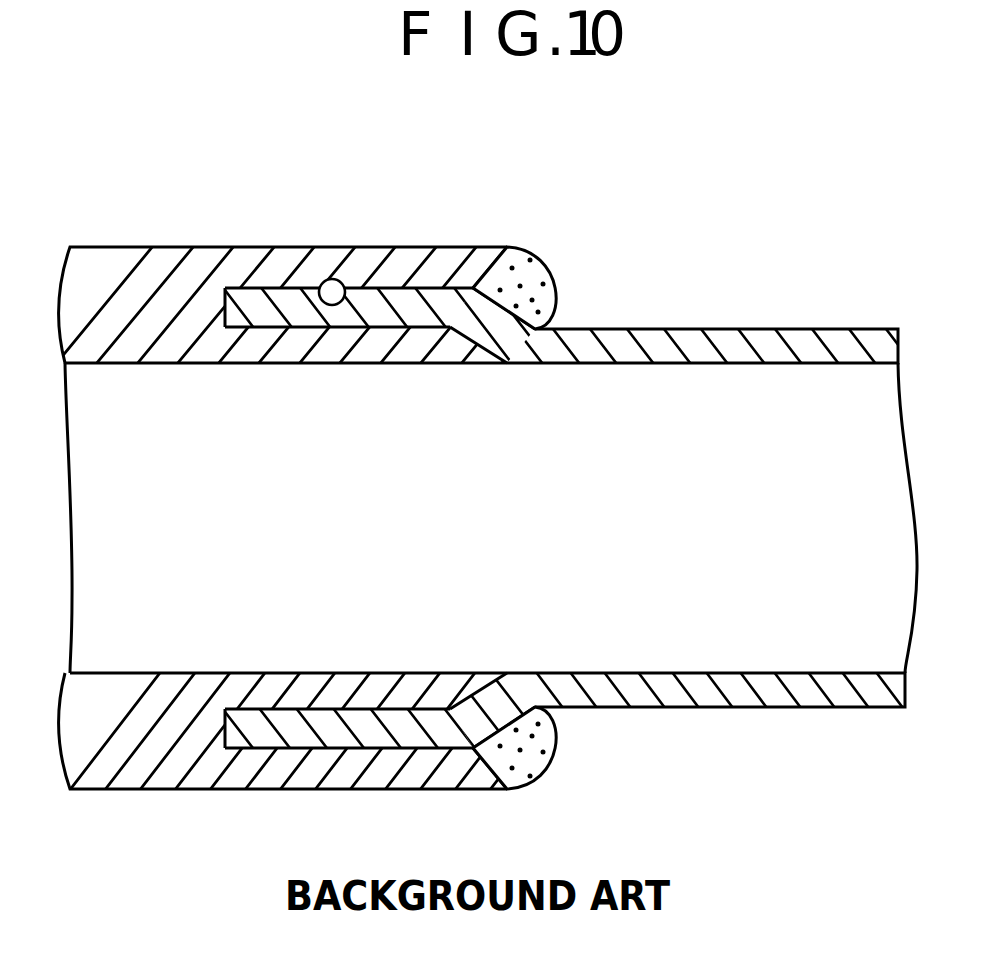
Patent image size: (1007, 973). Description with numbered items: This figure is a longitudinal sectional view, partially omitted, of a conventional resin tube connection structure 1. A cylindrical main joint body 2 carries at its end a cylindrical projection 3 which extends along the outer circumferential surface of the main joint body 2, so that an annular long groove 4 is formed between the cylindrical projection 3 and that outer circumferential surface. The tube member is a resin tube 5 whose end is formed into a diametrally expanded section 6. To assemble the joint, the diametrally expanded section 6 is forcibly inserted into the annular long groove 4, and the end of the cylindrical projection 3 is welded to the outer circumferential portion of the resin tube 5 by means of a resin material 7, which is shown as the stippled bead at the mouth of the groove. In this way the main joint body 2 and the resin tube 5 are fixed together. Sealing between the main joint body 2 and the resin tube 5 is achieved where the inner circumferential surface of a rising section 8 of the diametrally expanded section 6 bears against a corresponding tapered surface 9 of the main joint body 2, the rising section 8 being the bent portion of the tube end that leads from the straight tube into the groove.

The connection structure 1 is at (690, 174).
The main joint body 2 is at (155, 740).
The cylindrical projection 3 is at (408, 262).
The annular long groove 4 is at (334, 298).
The resin tube 5 is at (768, 347).
The diametrally expanded section 6 is at (403, 318).
The resin material 7 is at (523, 248).
The rising section 8 is at (512, 338).
The tapered surface 9 is at (475, 345).